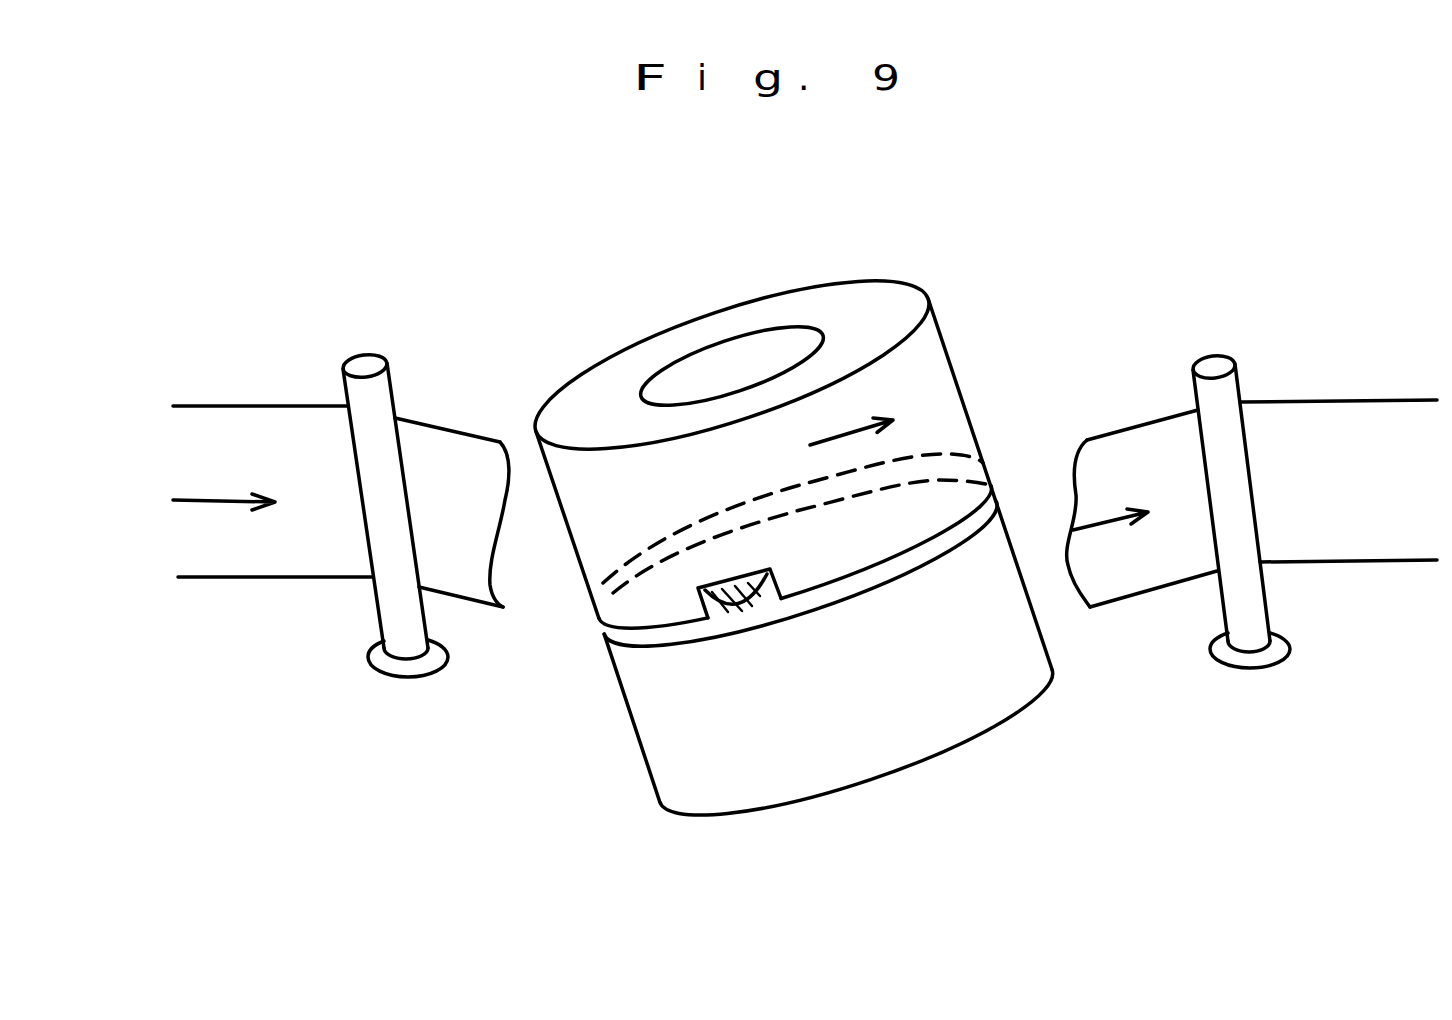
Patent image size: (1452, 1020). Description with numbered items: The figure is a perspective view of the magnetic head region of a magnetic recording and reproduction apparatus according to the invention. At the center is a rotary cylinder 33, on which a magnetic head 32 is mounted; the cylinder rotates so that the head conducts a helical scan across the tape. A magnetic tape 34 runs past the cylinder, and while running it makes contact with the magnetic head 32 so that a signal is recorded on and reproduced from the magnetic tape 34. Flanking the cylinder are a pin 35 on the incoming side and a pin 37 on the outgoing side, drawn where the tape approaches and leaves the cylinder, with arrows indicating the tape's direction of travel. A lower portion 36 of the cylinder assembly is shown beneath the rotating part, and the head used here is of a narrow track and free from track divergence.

The magnetic head 32 is at (740, 613).
The rotary cylinder 33 is at (608, 380).
The magnetic tape 34 is at (257, 560).
The left guide pin 35 is at (390, 557).
The rotary drum lower portion 36 is at (672, 740).
The right guide pin 37 is at (1222, 513).